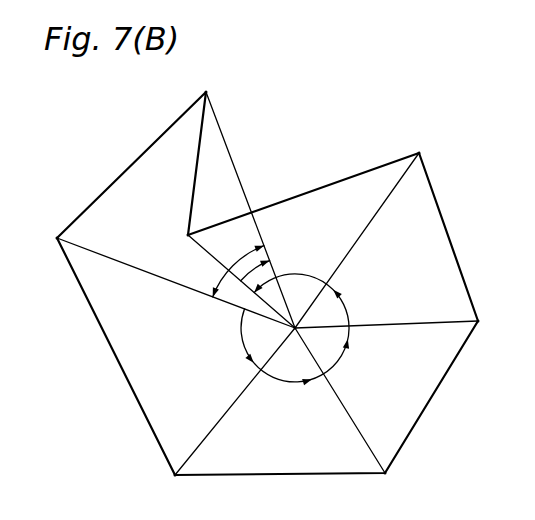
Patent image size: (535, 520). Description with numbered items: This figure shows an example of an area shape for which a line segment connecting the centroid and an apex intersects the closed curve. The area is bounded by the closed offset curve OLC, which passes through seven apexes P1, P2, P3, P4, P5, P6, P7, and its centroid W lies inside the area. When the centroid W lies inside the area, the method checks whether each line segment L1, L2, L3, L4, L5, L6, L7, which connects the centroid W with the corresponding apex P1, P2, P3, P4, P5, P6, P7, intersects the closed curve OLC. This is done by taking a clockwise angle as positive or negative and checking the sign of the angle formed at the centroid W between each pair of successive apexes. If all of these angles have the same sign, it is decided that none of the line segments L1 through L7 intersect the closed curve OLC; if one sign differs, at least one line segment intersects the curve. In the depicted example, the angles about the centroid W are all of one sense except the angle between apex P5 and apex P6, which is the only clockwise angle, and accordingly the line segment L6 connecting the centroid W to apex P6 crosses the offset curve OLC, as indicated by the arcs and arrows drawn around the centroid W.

The centroid W is at (281, 336).
The apex P1 is at (167, 487).
The apex P2 is at (395, 485).
The apex P3 is at (492, 322).
The apex P4 is at (432, 149).
The apex P5 is at (201, 219).
The apex P6 is at (219, 86).
The apex P7 is at (43, 237).
The line segment L1 is at (222, 423).
The line segment L2 is at (352, 413).
The line segment L3 is at (420, 321).
The line segment L4 is at (362, 233).
The line segment L5 is at (220, 265).
The line segment L6 is at (238, 175).
The line segment L7 is at (133, 265).
The closed curve OLC is at (340, 181).